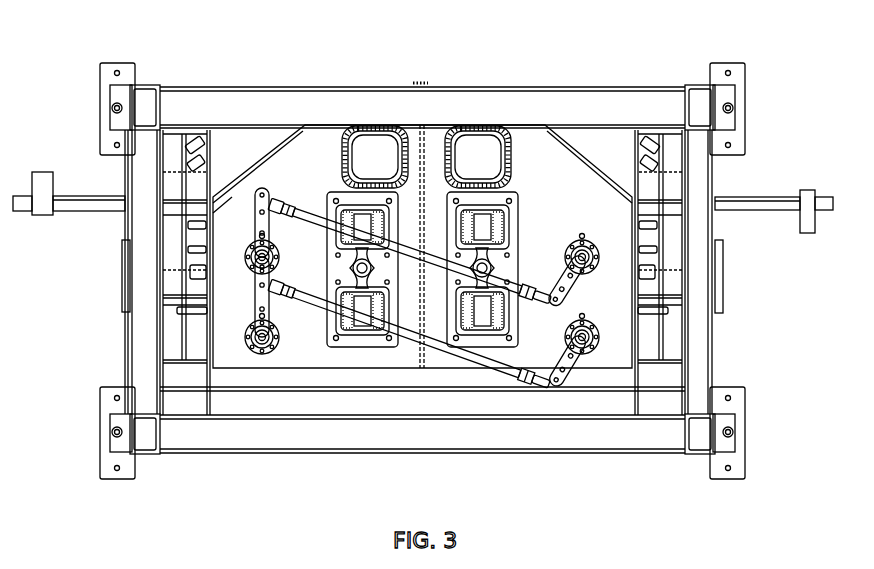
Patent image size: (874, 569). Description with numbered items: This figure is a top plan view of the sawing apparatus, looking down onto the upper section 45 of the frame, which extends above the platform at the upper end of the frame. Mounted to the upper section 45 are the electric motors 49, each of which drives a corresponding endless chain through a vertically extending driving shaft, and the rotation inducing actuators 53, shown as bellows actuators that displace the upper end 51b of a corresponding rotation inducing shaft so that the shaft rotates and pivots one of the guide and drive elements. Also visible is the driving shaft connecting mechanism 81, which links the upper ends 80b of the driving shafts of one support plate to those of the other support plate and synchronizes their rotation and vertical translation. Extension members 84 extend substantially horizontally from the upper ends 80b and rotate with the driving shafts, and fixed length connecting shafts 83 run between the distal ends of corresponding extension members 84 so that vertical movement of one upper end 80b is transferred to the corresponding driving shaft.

The upper section 45 is at (679, 58).
The electric motor 49 is at (380, 153).
The upper end of rotation inducing shaft 51b is at (450, 320).
The rotation inducing actuator 53 is at (318, 262).
The upper end of driving shaft 80b is at (266, 197).
The driving shaft connecting mechanism 81 is at (559, 219).
The connecting shaft 83 is at (408, 333).
The extension member 84 is at (258, 322).